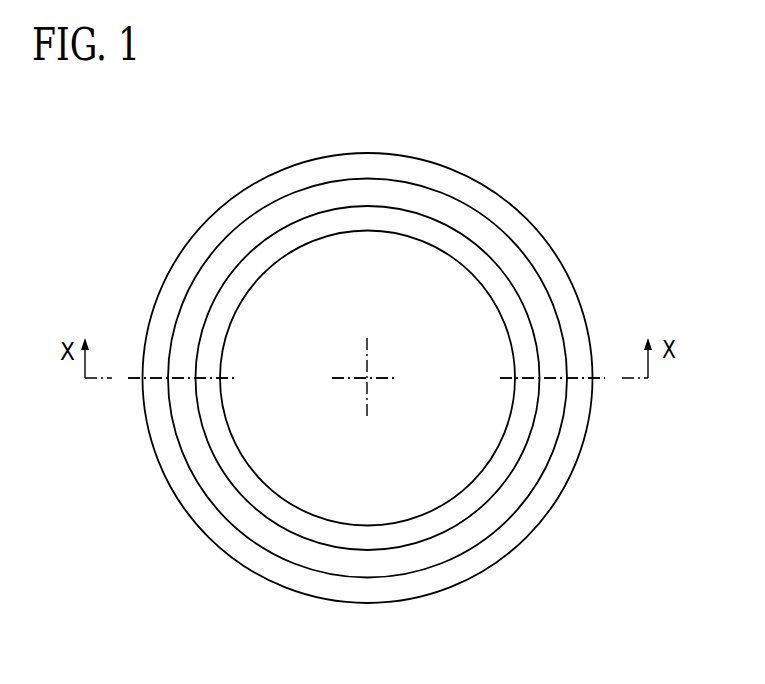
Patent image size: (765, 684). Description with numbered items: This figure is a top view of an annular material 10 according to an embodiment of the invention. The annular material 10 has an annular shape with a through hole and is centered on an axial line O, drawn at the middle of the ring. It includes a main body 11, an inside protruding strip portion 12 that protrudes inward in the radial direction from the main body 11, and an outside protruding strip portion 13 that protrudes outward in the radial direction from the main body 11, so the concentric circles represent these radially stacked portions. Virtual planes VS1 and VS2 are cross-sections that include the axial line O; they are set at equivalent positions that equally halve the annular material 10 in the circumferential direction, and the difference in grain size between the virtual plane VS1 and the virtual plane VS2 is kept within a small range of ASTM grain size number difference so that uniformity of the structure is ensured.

The annular material 10 is at (552, 134).
The main body 11 is at (283, 208).
The inside protruding strip portion 12 is at (236, 462).
The outside protruding strip portion 13 is at (549, 246).
The axial line O is at (367, 378).
The virtual plane VS1 is at (155, 379).
The virtual plane VS2 is at (553, 379).